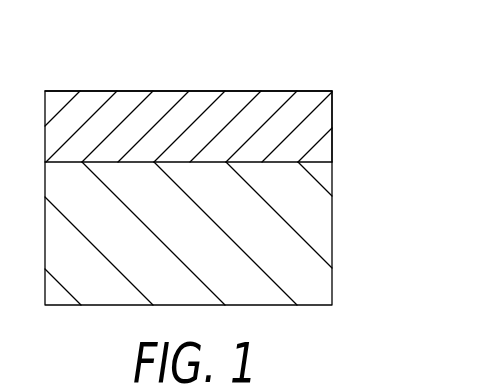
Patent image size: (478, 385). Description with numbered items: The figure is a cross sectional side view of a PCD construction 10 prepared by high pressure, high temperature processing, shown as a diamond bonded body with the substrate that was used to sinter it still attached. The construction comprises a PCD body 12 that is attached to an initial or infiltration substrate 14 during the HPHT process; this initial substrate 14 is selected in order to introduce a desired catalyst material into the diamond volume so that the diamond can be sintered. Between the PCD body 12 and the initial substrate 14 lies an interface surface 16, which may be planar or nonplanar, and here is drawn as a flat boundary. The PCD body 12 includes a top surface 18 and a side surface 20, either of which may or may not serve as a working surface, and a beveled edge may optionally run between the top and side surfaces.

The PCD construction 10 is at (322, 60).
The PCD body 12 is at (320, 143).
The initial substrate 14 is at (308, 270).
The interface surface 16 is at (285, 162).
The top surface 18 is at (193, 90).
The side surface 20 is at (332, 109).